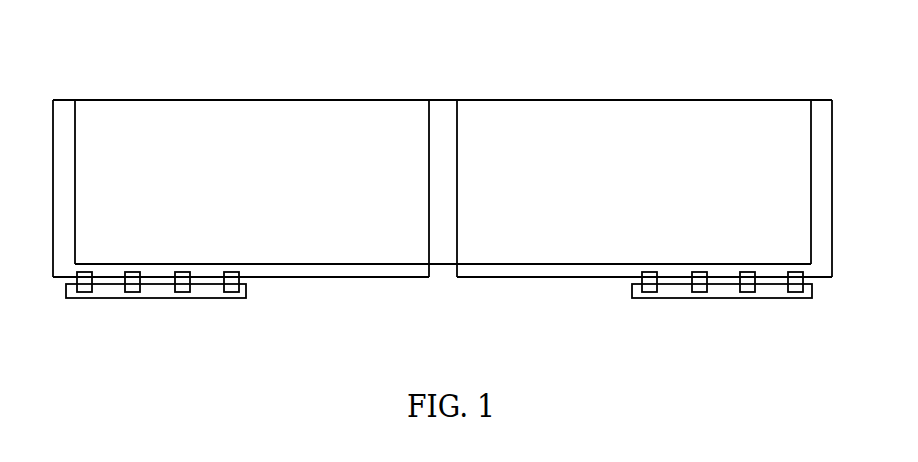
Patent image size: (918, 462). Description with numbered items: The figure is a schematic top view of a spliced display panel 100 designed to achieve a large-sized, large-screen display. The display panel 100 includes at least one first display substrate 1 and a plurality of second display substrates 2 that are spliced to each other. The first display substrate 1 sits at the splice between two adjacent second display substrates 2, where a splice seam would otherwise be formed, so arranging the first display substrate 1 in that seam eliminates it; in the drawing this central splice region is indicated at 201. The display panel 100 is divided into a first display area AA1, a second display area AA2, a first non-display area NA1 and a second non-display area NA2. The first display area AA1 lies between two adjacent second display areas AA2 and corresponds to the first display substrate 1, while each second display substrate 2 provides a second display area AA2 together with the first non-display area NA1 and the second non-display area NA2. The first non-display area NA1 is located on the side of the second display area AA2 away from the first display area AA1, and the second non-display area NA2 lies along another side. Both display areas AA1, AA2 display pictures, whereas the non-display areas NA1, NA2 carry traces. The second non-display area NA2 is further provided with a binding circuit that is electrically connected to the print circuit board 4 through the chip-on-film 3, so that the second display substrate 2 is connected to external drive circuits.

The display panel 100 is at (161, 59).
The first display substrate 1 is at (444, 128).
The second display substrate 2 is at (309, 132).
The chip-on-film 3 is at (150, 289).
The print circuit board 4 is at (228, 280).
The gap between display panels 201 is at (440, 283).
The first display area AA1 is at (443, 170).
The second display area AA2 is at (205, 138).
The first non-display area NA1 is at (65, 252).
The second non-display area NA2 is at (315, 272).